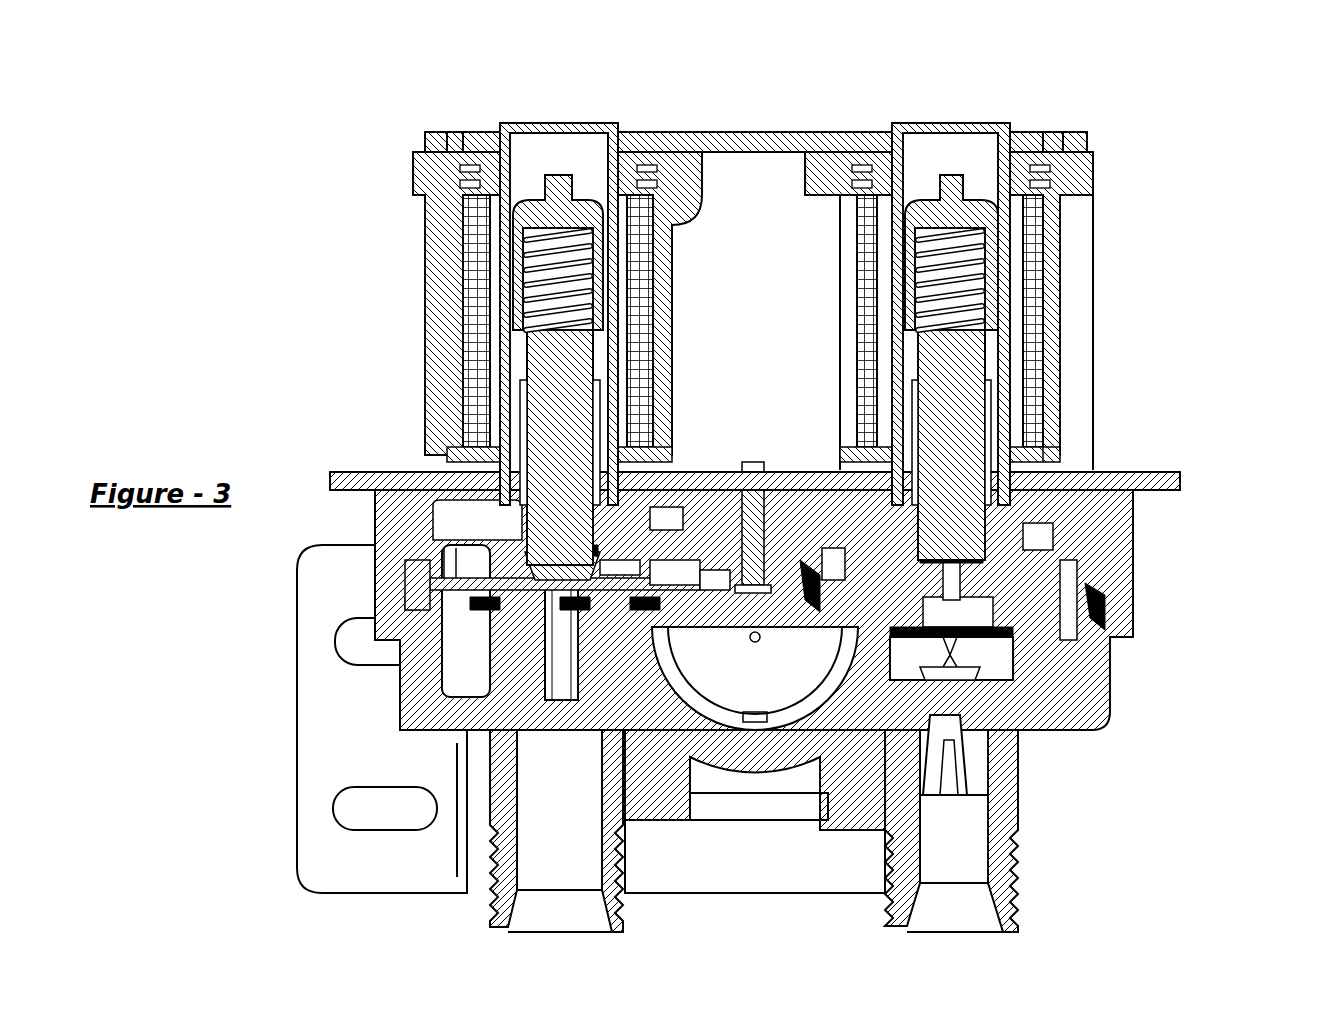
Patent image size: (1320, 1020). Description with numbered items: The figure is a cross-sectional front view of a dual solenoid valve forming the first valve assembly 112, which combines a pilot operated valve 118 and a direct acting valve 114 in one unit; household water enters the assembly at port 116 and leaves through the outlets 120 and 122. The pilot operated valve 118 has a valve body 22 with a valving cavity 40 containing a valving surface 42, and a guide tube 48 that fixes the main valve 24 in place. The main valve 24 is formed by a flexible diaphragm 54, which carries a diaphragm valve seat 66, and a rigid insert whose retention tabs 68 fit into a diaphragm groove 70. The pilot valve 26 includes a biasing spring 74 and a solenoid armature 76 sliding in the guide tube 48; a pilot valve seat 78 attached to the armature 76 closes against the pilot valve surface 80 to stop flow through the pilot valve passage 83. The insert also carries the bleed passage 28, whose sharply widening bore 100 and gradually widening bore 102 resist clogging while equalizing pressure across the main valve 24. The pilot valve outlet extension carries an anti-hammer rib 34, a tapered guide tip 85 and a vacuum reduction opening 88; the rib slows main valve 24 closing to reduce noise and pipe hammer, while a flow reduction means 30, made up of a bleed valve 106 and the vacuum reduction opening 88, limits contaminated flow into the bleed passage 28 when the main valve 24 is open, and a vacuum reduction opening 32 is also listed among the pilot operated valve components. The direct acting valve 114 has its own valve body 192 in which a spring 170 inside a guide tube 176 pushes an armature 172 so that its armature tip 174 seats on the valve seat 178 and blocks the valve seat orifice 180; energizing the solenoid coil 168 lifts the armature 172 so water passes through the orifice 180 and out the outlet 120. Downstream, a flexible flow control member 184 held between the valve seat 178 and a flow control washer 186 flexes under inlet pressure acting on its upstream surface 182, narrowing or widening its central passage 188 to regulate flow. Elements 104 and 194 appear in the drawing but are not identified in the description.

The valve body 22 is at (740, 590).
The main valve 24 is at (345, 527).
The pilot valve 26 is at (688, 388).
The bleed passage 28 is at (753, 585).
The flow reduction means 30 is at (390, 685).
The vacuum reduction opening 32 is at (566, 738).
The anti-hammer rib 34 is at (466, 621).
The valving cavity 40 is at (440, 668).
The valving surface 42 is at (516, 630).
The guide tube 48 is at (562, 178).
The diaphragm 54 is at (725, 590).
The diaphragm valve seat 66 is at (440, 585).
The retention tabs 68 is at (808, 590).
The diaphragm groove 70 is at (818, 612).
The biasing spring 74 is at (540, 290).
The solenoid armature 76 is at (593, 358).
The pilot valve seat 78 is at (578, 545).
The pilot valve surface 80 is at (610, 562).
The pilot valve passage 83 is at (535, 560).
The guide tip 85 is at (620, 755).
The vacuum reduction opening 88 is at (560, 650).
The sharply widening bore 100 is at (660, 640).
The gradually widening bore 102 is at (690, 580).
The flange plate 104 is at (545, 480).
The bleed valve 106 is at (400, 515).
The first valve assembly 112 is at (1232, 140).
The direct acting valve 114 is at (1042, 369).
The port 116 is at (770, 640).
The pilot operated valve 118 is at (623, 327).
The outlet 120 is at (958, 925).
The outlet 122 is at (553, 925).
The solenoid coil 168 is at (1085, 215).
The spring 170 is at (1075, 240).
The armature 172 is at (1085, 340).
The armature tip 174 is at (1085, 380).
The guide tube 176 is at (1060, 457).
The valve seat 178 is at (1150, 480).
The valve seat orifice 180 is at (1185, 490).
The upstream surface 182 is at (990, 612).
The flow control member 184 is at (1000, 650).
The flow control washer 186 is at (965, 690).
The central passage 188 is at (1000, 665).
The valve body 192 is at (952, 695).
The metering needle 194 is at (960, 720).